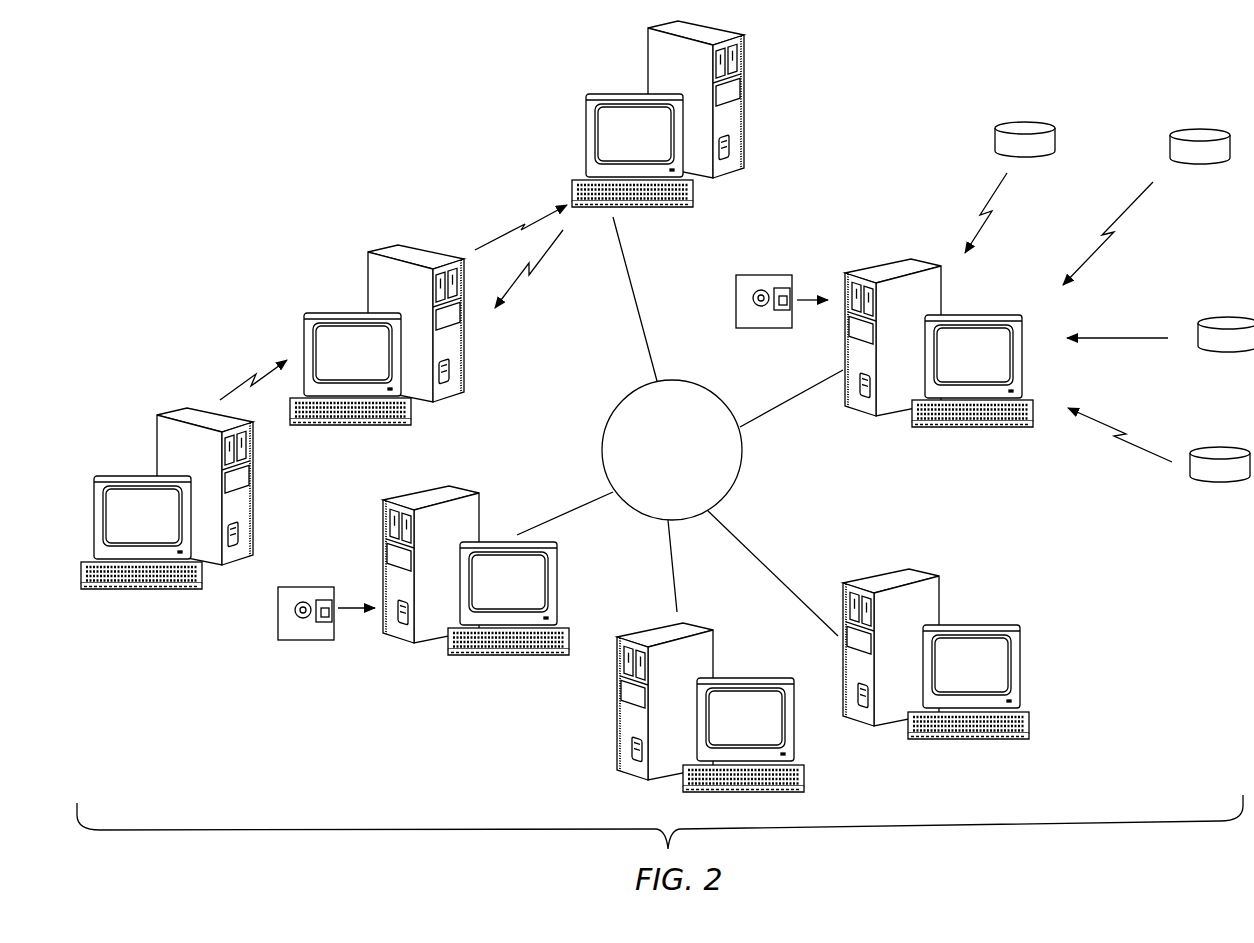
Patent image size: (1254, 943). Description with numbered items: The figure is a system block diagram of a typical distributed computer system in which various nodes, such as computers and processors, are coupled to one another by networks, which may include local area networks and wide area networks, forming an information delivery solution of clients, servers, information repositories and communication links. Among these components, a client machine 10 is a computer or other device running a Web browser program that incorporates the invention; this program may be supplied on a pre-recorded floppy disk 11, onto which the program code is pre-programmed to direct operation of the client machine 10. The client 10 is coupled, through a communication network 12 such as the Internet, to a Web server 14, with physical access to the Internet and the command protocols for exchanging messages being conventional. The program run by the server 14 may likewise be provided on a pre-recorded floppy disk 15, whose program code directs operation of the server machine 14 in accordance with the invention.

The client machine 10 is at (448, 655).
The floppy disk 11 is at (278, 612).
The communication network 12 is at (672, 450).
The Web server 14 is at (896, 256).
The floppy disk 15 is at (737, 278).